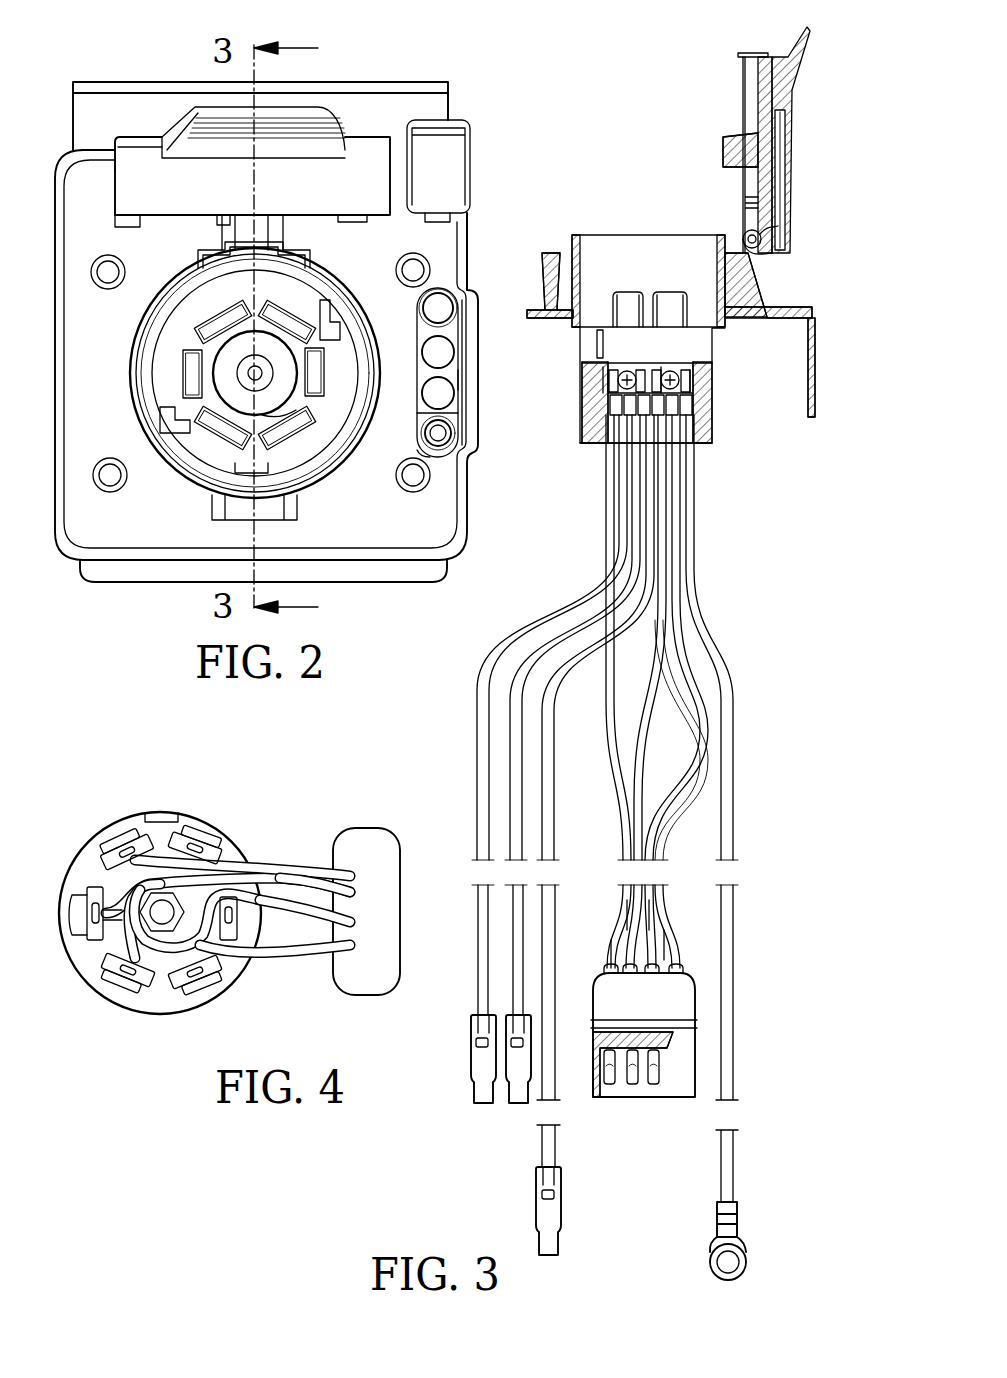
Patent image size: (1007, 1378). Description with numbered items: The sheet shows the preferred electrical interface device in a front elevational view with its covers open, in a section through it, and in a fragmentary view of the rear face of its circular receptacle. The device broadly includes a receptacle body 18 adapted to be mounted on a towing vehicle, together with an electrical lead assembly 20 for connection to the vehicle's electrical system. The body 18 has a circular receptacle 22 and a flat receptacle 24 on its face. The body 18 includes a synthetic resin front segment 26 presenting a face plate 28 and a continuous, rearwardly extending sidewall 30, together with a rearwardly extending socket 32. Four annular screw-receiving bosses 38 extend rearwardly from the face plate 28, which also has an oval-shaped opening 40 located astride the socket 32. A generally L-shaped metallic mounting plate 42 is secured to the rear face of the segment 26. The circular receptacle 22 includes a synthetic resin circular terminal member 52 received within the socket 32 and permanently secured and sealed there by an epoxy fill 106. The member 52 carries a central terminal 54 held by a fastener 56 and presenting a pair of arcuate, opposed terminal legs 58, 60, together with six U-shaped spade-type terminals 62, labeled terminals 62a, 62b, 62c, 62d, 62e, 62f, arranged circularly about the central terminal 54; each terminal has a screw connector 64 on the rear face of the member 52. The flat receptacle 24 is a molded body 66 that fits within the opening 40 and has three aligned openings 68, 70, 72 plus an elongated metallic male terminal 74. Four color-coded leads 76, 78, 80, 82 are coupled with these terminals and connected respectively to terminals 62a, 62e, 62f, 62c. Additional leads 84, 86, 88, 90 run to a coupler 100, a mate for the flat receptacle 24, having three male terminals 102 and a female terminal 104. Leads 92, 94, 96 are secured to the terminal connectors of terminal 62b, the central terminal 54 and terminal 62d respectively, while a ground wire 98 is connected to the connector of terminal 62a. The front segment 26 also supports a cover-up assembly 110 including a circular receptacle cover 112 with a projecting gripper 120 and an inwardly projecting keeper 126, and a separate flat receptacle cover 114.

In FIG. 2, the receptacle body 18 is at (506, 189).
In FIG. 3, the receptacle body 18 is at (808, 246).
In FIG. 3, the electrical lead assembly 20 is at (728, 658).
In FIG. 2, the circular receptacle 22 is at (102, 413).
In FIG. 2, the flat receptacle 24 is at (478, 285).
In FIG. 2, the front segment 26 is at (63, 562).
In FIG. 2, the face plate 28 is at (440, 532).
In FIG. 3, the face plate 28 is at (556, 255).
In FIG. 3, the sidewall 30 is at (770, 298).
In FIG. 3, the socket 32 is at (722, 333).
In FIG. 2, the screw-receiving bosses 38 is at (92, 268).
In FIG. 2, the oval-shaped opening 40 is at (460, 380).
In FIG. 2, the mounting plate 42 is at (440, 106).
In FIG. 3, the mounting plate 42 is at (812, 378).
In FIG. 2, the circular terminal member 52 is at (300, 440).
In FIG. 3, the circular terminal member 52 is at (606, 330).
In FIG. 4, the circular terminal member 52 is at (225, 842).
In FIG. 2, the central terminal 54 is at (262, 405).
In FIG. 3, the central terminal 54 is at (660, 402).
In FIG. 2, the fastener 56 is at (246, 370).
In FIG. 4, the fastener 56 is at (160, 900).
In FIG. 2, the terminal leg 58 is at (216, 330).
In FIG. 2, the terminal leg 60 is at (300, 445).
In FIG. 2, the spade-type terminals 62 is at (328, 357).
In FIG. 3, the spade-type terminals 62 is at (648, 296).
In FIG. 2, the spade-type terminal 62a is at (283, 320).
In FIG. 3, the spade-type terminal 62a is at (676, 367).
In FIG. 4, the spade-type terminal 62a is at (120, 848).
In FIG. 2, the spade-type terminal 62b is at (225, 318).
In FIG. 4, the spade-type terminal 62b is at (192, 838).
In FIG. 2, the spade-type terminal 62c is at (185, 360).
In FIG. 3, the spade-type terminal 62c is at (605, 383).
In FIG. 4, the spade-type terminal 62c is at (248, 905).
In FIG. 2, the spade-type terminal 62d is at (195, 430).
In FIG. 3, the spade-type terminal 62d is at (605, 367).
In FIG. 4, the spade-type terminal 62d is at (218, 985).
In FIG. 2, the spade-type terminal 62e is at (305, 448).
In FIG. 4, the spade-type terminal 62e is at (137, 982).
In FIG. 2, the spade-type terminal 62f is at (352, 430).
In FIG. 3, the spade-type terminal 62f is at (703, 383).
In FIG. 4, the spade-type terminal 62f is at (72, 903).
In FIG. 4, the screw connector 64 is at (185, 990).
In FIG. 2, the body 66 is at (452, 332).
In FIG. 4, the body 66 is at (387, 838).
In FIG. 2, the opening 68 is at (440, 298).
In FIG. 2, the opening 70 is at (427, 339).
In FIG. 2, the opening 72 is at (452, 402).
In FIG. 2, the male terminal 74 is at (452, 438).
In FIG. 4, the electrical lead 76 is at (313, 877).
In FIG. 4, the electrical lead 78 is at (363, 895).
In FIG. 4, the electrical lead 80 is at (355, 924).
In FIG. 4, the electrical lead 82 is at (328, 952).
In FIG. 3, the electrical lead 84 is at (666, 945).
In FIG. 3, the electrical lead 86 is at (654, 923).
In FIG. 3, the electrical lead 88 is at (632, 935).
In FIG. 3, the electrical lead 90 is at (611, 950).
In FIG. 3, the electrical lead 92 is at (512, 956).
In FIG. 3, the electrical lead 94 is at (545, 1150).
In FIG. 3, the electrical lead 96 is at (480, 990).
In FIG. 3, the ground wire 98 is at (733, 1025).
In FIG. 3, the coupler 100 is at (685, 995).
In FIG. 3, the male terminals 102 is at (613, 1085).
In FIG. 3, the female terminal 104 is at (668, 1092).
In FIG. 3, the epoxy fill 106 is at (702, 440).
In FIG. 2, the cover-up assembly 110 is at (428, 82).
In FIG. 2, the circular receptacle cover 112 is at (146, 140).
In FIG. 2, the flat receptacle cover 114 is at (460, 153).
In FIG. 2, the gripper 120 is at (298, 120).
In FIG. 2, the keeper 126 is at (273, 230).